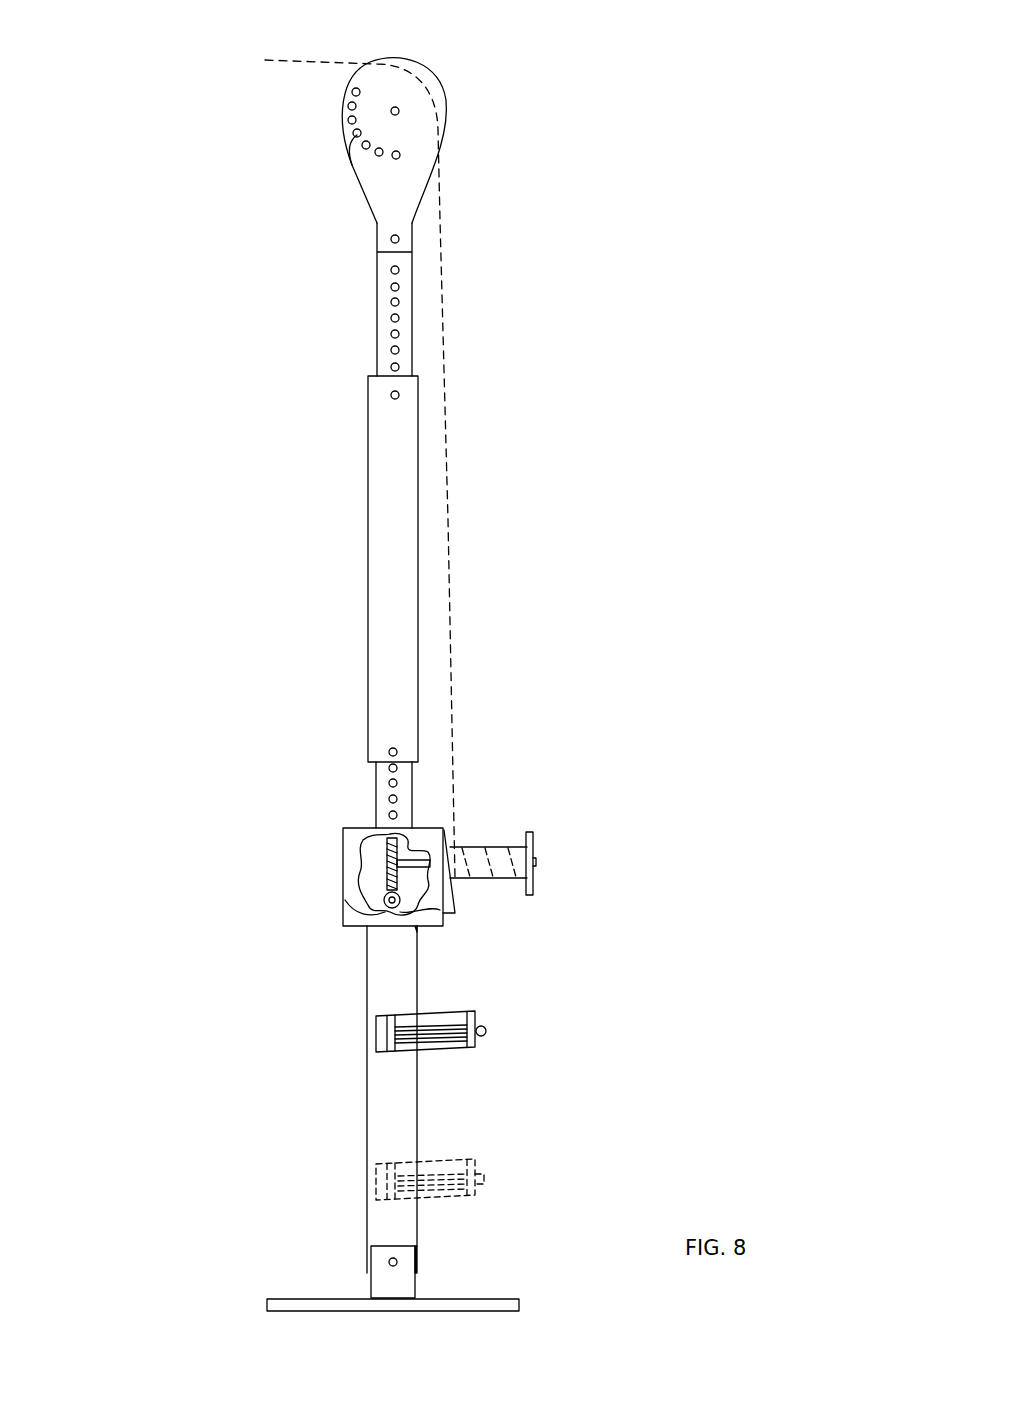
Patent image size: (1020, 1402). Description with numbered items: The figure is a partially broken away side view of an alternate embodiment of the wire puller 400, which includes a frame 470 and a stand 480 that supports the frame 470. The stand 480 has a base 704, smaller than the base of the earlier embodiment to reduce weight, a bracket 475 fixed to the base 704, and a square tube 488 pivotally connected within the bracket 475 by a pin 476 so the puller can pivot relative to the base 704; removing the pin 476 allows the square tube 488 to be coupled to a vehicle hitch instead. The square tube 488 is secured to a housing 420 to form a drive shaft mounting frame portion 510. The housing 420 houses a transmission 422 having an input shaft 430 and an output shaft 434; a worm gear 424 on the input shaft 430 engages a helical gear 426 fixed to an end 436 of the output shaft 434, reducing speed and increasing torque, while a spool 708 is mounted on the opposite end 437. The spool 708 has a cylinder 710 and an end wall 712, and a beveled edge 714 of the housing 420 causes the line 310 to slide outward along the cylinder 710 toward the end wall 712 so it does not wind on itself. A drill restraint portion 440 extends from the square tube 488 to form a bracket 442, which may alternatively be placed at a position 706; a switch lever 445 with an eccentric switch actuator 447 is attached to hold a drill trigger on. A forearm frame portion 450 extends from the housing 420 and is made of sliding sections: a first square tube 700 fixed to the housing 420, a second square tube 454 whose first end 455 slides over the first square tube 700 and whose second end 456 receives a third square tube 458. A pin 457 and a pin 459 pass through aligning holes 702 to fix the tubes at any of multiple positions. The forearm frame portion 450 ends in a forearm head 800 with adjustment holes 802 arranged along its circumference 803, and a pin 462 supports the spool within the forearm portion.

The wire puller 400 is at (733, 290).
The line 310 is at (293, 62).
The pin 462 is at (398, 110).
The forearm head 800 is at (405, 128).
The adjustment holes 802 is at (350, 105).
The circumference 803 is at (355, 143).
The third square tube 458 is at (412, 298).
The aligning holes 702 is at (391, 334).
The pin 459 is at (399, 395).
The second end 456 is at (398, 470).
The frame 470 is at (223, 572).
The first end 455 is at (393, 710).
The forearm frame portion 450 is at (368, 660).
The second square tube 454 is at (368, 710).
The pin 457 is at (389, 752).
The first square tube 700 is at (382, 783).
The transmission 422 is at (252, 888).
The housing 420 is at (343, 828).
The input shaft 430 is at (380, 912).
The helical gear 426 is at (343, 870).
The output shaft 434 is at (430, 835).
The end 436 is at (413, 830).
The cylinder 710 is at (493, 880).
The end 437 is at (535, 862).
The end wall 712 is at (535, 885).
The spool 708 is at (524, 828).
The beveled edge 714 is at (450, 907).
The worm gear 424 is at (403, 932).
The drive shaft mounting frame portion 510 is at (368, 930).
The drill restraint portion 440 is at (378, 1016).
The switch lever 445 is at (486, 1032).
The switch actuator 447 is at (380, 1034).
The bracket 442 is at (448, 1052).
The square tube 488 is at (417, 1122).
The stand 480 is at (231, 1173).
The position 706 is at (375, 1185).
The bracket 475 is at (371, 1246).
The pin 476 is at (397, 1262).
The base 704 is at (505, 1298).